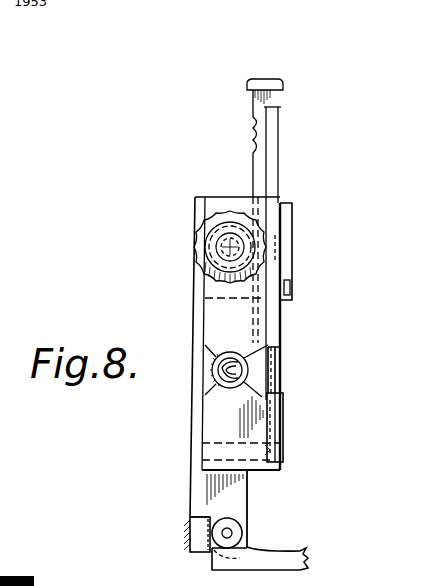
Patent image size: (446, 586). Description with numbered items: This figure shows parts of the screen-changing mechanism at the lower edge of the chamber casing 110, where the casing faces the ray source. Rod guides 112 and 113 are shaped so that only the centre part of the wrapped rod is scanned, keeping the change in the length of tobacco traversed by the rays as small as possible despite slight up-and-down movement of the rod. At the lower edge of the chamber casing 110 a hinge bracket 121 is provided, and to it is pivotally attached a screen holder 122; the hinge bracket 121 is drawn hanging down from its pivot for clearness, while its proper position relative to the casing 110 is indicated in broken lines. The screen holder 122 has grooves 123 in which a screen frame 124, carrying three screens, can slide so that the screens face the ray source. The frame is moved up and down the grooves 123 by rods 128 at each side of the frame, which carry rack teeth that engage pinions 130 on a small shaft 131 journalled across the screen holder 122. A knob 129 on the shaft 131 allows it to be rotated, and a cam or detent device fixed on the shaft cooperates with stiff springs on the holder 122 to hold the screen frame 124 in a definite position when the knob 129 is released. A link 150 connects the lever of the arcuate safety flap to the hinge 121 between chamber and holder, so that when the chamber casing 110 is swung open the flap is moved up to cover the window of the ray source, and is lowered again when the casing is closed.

The chamber casing 110 is at (188, 533).
The rod guide 112 is at (213, 367).
The rod guide 113 is at (222, 376).
The hinge bracket 121 is at (206, 549).
The screen holder 122 is at (260, 480).
The grooves 123 is at (273, 437).
The screen frame 124 is at (276, 372).
The rods 128 is at (262, 98).
The knob 129 is at (197, 230).
The pinions 130 is at (193, 255).
The shaft 131 is at (240, 247).
The link 150 is at (290, 552).